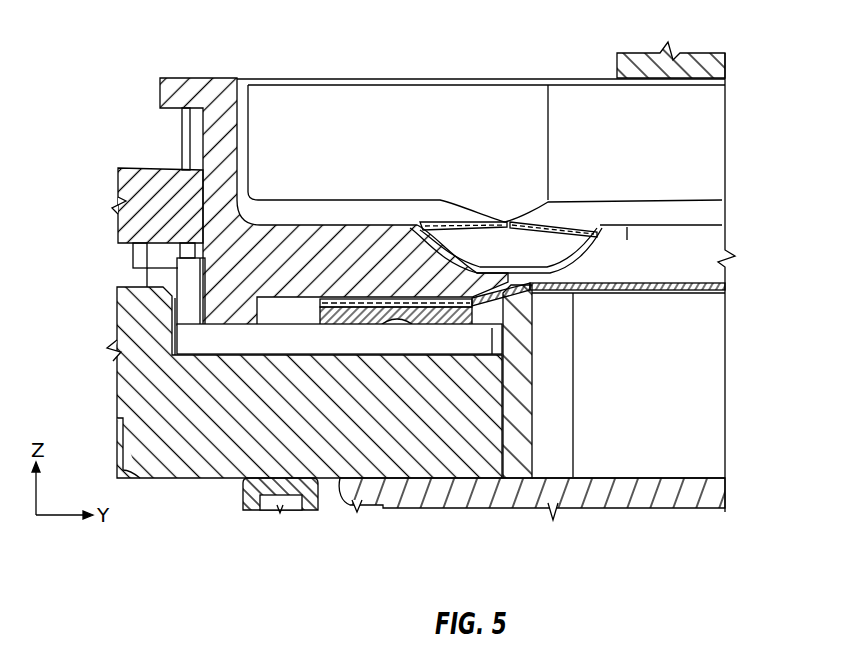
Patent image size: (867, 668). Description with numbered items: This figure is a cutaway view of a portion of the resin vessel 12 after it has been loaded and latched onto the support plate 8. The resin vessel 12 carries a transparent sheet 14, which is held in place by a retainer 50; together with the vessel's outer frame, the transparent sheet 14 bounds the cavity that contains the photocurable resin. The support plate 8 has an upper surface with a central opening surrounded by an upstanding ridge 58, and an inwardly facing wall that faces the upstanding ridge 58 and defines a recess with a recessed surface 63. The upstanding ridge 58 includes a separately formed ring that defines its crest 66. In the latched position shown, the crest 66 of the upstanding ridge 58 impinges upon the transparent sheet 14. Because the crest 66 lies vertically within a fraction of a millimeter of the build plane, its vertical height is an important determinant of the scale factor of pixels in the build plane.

The resin vessel 12 is at (192, 107).
The crest 66 is at (523, 290).
The retainer 50 is at (350, 310).
The transparent sheet 14 is at (683, 282).
The upstanding ridge 58 is at (521, 330).
The support plate 8 is at (687, 403).
The recessed surface 63 is at (415, 357).